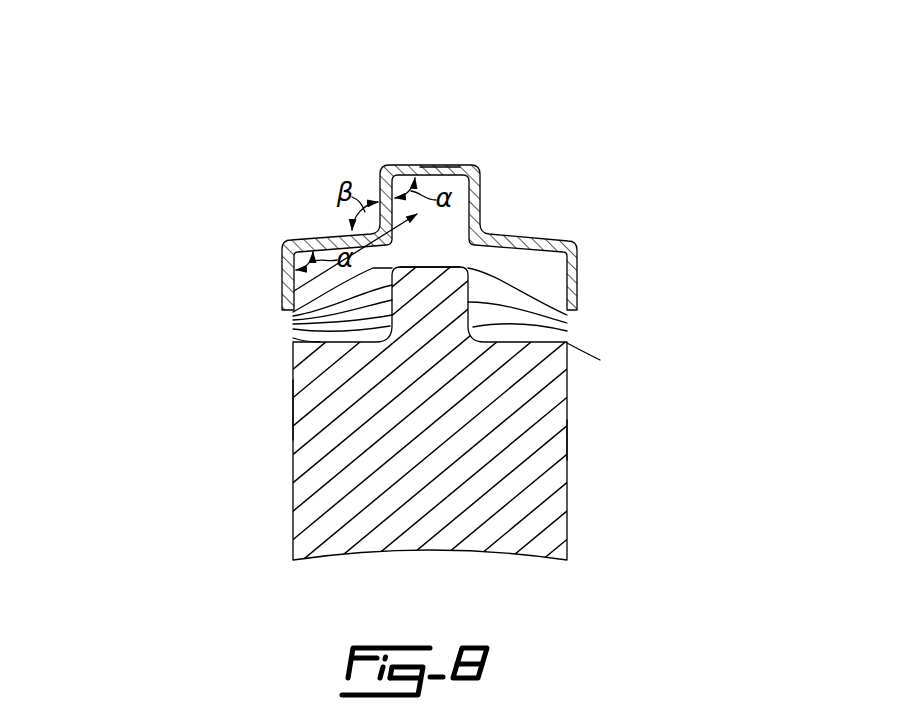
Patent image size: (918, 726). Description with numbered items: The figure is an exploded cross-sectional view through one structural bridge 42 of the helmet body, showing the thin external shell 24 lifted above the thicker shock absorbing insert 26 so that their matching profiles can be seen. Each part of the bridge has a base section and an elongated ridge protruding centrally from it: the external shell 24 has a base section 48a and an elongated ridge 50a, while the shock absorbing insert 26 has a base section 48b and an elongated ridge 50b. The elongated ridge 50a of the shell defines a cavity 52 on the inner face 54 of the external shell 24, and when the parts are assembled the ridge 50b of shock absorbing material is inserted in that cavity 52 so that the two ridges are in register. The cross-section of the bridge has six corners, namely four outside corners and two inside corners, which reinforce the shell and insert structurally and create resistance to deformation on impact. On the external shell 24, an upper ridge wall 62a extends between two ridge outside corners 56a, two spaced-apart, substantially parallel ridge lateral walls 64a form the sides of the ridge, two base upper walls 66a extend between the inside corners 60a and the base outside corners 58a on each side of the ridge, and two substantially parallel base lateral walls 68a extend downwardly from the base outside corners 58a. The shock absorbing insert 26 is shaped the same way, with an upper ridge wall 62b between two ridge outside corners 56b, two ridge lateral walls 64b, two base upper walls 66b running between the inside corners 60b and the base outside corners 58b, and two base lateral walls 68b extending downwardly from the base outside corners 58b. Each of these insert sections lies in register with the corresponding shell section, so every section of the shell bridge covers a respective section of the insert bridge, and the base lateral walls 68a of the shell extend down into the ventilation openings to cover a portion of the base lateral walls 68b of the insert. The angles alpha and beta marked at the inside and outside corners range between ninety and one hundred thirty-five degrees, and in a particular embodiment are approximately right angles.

The external shell 24 is at (450, 165).
The shock absorbing insert 26 is at (567, 508).
The structural bridge 42 is at (552, 197).
The base section of the external shell 48a is at (577, 280).
The base section of the shock absorbing insert 48b is at (567, 437).
The elongated ridge of the external shell 50a is at (362, 232).
The elongated ridge of the shock absorbing insert 50b is at (293, 320).
The cavity 52 is at (282, 293).
The inner face of the external shell 54 is at (577, 262).
The ridge outside corners of the external shell 56a is at (479, 166).
The ridge outside corners of the shock absorbing insert 56b is at (293, 312).
The base outside corners of the external shell 58a is at (577, 243).
The base outside corners of the shock absorbing insert 58b is at (293, 338).
The inside corners of the external shell 60a is at (487, 233).
The inside corners of the shock absorbing insert 60b is at (293, 324).
The upper ridge wall of the external shell 62a is at (432, 165).
The upper ridge wall of the shock absorbing insert 62b is at (435, 267).
The ridge lateral walls of the external shell 64a is at (483, 205).
The ridge lateral walls of the shock absorbing insert 64b is at (293, 316).
The base upper walls of the external shell 66a is at (510, 237).
The base upper walls of the shock absorbing insert 66b is at (293, 329).
The base lateral walls of the external shell 68a is at (577, 300).
The base lateral walls of the shock absorbing insert 68b is at (567, 385).